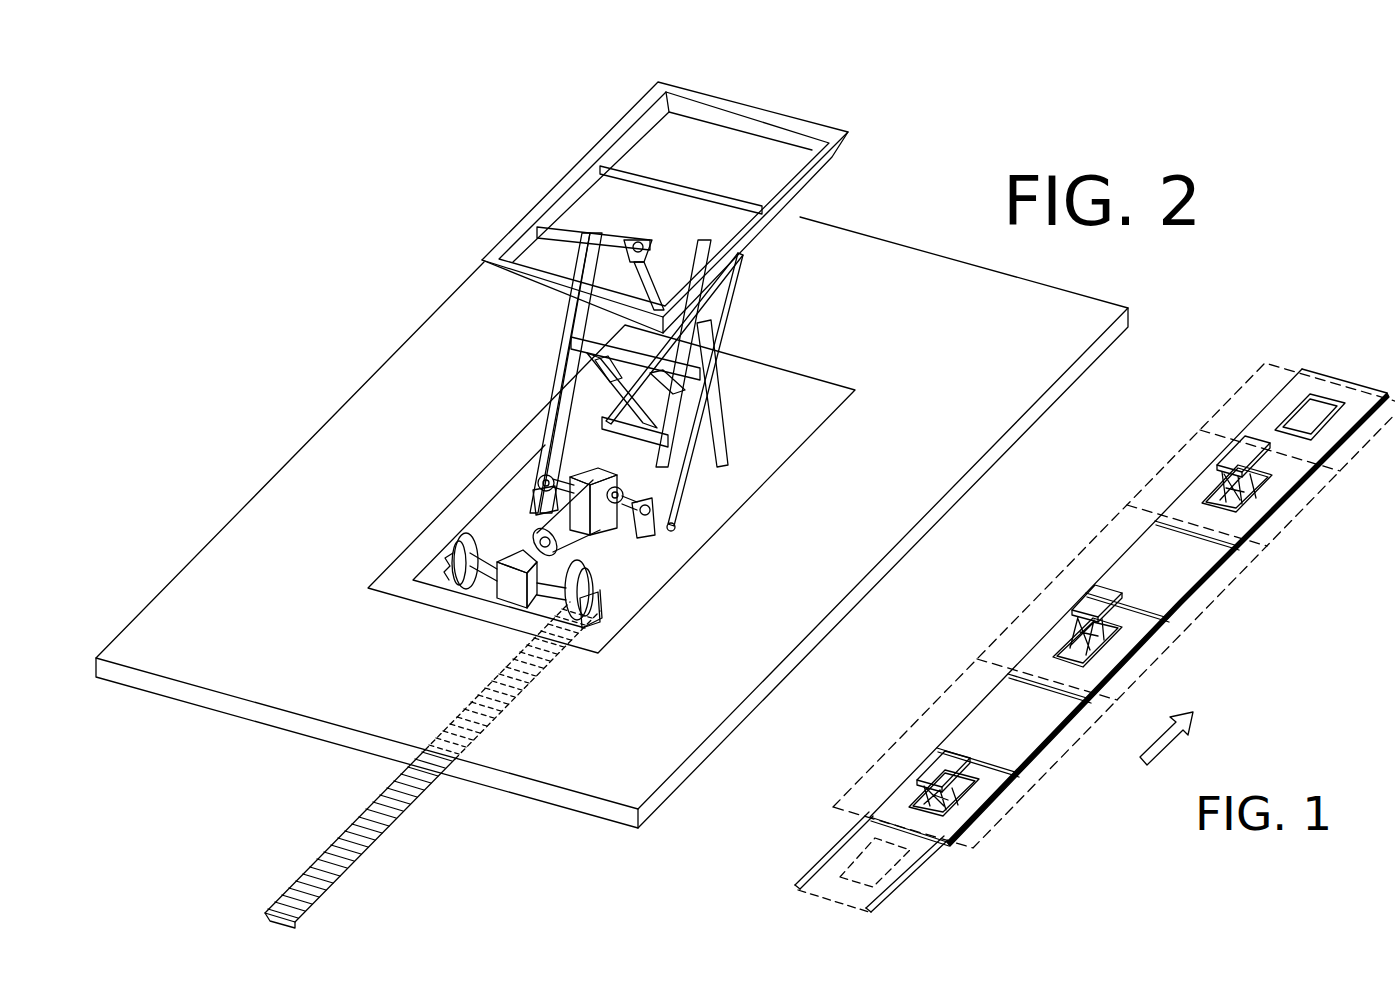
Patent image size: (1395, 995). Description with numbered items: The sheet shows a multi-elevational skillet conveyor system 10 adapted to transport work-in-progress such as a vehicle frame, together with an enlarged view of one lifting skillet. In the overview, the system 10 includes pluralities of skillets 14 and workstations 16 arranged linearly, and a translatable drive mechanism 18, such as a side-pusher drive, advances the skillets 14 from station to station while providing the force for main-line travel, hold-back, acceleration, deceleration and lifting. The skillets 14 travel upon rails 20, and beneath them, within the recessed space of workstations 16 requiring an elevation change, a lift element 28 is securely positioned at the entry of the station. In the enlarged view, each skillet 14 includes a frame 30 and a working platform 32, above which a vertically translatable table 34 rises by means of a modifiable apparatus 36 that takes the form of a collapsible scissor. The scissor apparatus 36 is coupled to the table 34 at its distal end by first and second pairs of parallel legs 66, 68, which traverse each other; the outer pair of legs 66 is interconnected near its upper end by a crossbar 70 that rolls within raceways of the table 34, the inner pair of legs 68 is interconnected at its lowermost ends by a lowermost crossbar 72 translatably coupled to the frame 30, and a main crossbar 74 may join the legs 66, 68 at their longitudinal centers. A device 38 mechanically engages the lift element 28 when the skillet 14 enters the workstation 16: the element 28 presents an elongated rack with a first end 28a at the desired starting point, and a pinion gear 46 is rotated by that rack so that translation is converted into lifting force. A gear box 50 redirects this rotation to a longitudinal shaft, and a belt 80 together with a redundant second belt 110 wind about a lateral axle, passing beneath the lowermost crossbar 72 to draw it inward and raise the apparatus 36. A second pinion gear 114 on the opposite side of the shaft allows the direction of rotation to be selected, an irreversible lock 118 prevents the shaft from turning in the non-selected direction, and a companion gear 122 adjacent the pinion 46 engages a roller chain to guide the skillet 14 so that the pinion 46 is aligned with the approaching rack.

In FIG. 1, the multi-elevational skillet conveyor system 10 is at (1306, 637).
In FIG. 2, the skillet 14 is at (375, 236).
In FIG. 1, the skillet 14 is at (1043, 632).
In FIG. 1, the workstation 16 is at (1113, 540).
In FIG. 1, the translatable drive mechanism 18 is at (798, 886).
In FIG. 1, the rail 20 is at (850, 810).
In FIG. 2, the lift element 28 is at (250, 876).
In FIG. 2, the first end 28a is at (278, 918).
In FIG. 2, the frame 30 is at (317, 725).
In FIG. 2, the working platform 32 is at (966, 369).
In FIG. 2, the vertically translatable table 34 is at (627, 108).
In FIG. 2, the modifiable apparatus 36 is at (762, 338).
In FIG. 2, the device 38 is at (476, 498).
In FIG. 2, the pinion gear 46 is at (565, 617).
In FIG. 2, the gear box 50 is at (530, 610).
In FIG. 2, the first pair of parallel legs 66 is at (746, 257).
In FIG. 2, the second pair of parallel legs 68 is at (728, 458).
In FIG. 2, the crossbar 70 is at (600, 172).
In FIG. 2, the lowermost crossbar 72 is at (723, 500).
In FIG. 2, the main crossbar 74 is at (578, 347).
In FIG. 2, the belt 80 is at (647, 482).
In FIG. 2, the second belt 110 is at (598, 466).
In FIG. 2, the second pinion gear 114 is at (475, 598).
In FIG. 2, the irreversible lock 118 is at (536, 508).
In FIG. 2, the companion gear 122 is at (620, 582).